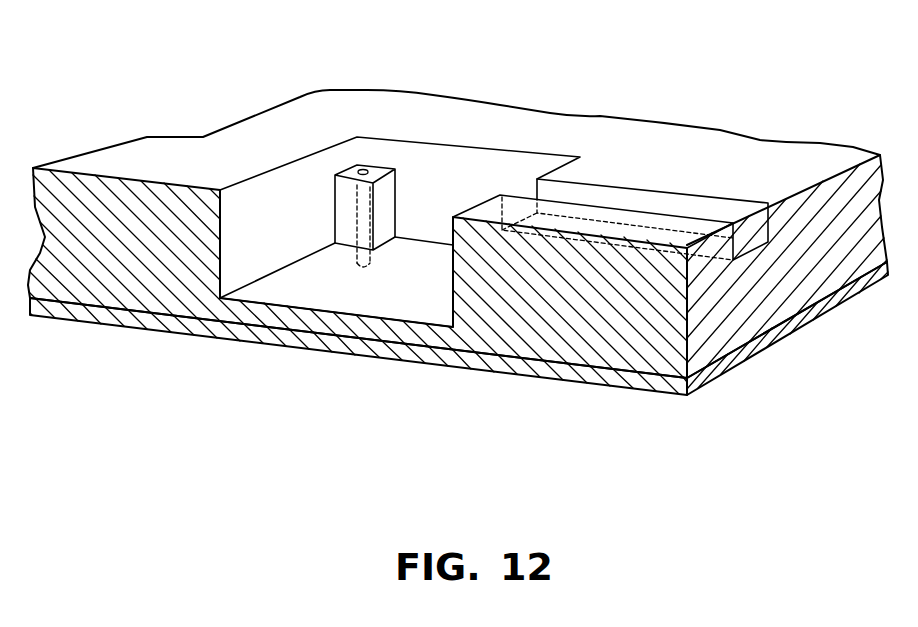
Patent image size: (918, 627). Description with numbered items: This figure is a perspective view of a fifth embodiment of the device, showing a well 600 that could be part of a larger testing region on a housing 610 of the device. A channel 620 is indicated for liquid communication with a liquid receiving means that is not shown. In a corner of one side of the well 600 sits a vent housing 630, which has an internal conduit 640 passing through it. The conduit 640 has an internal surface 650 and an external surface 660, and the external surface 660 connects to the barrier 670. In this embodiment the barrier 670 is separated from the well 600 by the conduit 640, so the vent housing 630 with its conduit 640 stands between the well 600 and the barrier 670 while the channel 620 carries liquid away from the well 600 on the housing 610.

The well 600 is at (455, 172).
The housing 610 is at (650, 145).
The channel 620 is at (717, 210).
The vent housing 630 is at (388, 192).
The internal conduit 640 is at (363, 256).
The internal surface 650 is at (381, 167).
The external surface 660 is at (372, 277).
The barrier 670 is at (216, 337).